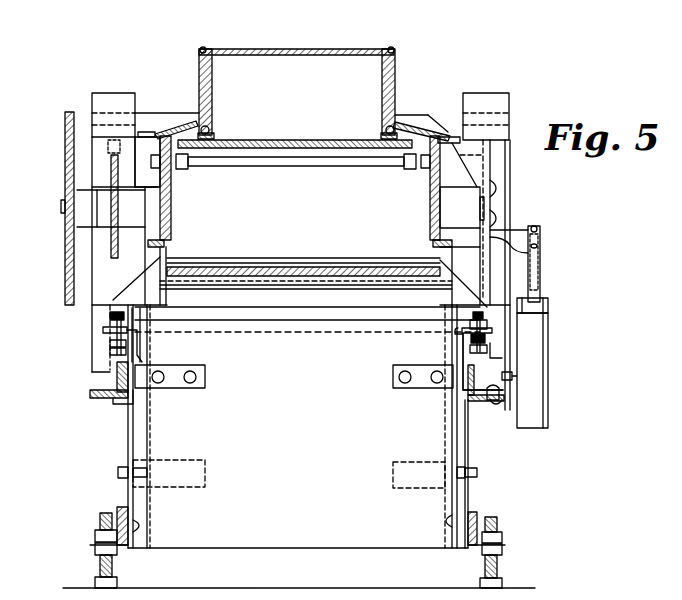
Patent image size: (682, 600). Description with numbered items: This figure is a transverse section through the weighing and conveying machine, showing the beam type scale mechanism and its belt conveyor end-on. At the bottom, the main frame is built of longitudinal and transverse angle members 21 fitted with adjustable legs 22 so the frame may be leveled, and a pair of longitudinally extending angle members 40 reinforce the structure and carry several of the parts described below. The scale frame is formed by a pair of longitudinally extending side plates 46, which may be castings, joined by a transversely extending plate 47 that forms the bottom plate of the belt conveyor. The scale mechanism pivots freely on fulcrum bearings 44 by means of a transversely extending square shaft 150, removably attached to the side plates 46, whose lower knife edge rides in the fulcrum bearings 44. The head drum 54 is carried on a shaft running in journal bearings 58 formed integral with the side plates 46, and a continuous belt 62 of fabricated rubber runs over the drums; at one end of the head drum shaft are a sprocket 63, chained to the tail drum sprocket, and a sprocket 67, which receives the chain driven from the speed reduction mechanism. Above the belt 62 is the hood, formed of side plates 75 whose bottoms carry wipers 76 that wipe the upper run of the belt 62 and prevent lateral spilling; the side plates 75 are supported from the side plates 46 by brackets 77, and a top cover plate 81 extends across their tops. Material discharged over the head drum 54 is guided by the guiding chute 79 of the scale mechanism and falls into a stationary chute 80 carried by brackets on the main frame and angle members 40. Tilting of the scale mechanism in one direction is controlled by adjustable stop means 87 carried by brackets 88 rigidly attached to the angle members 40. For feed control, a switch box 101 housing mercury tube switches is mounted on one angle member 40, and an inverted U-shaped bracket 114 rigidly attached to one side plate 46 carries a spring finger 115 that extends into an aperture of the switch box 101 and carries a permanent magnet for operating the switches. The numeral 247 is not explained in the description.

The angle members 21 is at (97, 538).
The adjustable legs 22 is at (98, 565).
The angle members 40 is at (90, 394).
The fulcrum bearings 44 is at (122, 187).
The side plates 46 is at (168, 235).
The transversely extending plate 47 is at (302, 150).
The head drum 54 is at (372, 248).
The journal bearings 58 is at (148, 197).
The continuous belt 62 is at (302, 147).
The sprocket 63 is at (118, 212).
The sprocket 67 is at (68, 230).
The side plates 75 is at (208, 67).
The wipers 76 is at (212, 135).
The brackets 77 is at (174, 133).
The guiding chute 79 is at (315, 305).
The stationary chute 80 is at (302, 516).
The top cover plate 81 is at (289, 49).
The adjustable stop means 87 is at (110, 343).
The brackets 88 is at (103, 330).
The switch box 101 is at (534, 395).
The inverted U-shaped bracket 114 is at (517, 228).
The spring finger 115 is at (540, 298).
The square shaft 150 is at (428, 120).
The floor 247 is at (587, 599).